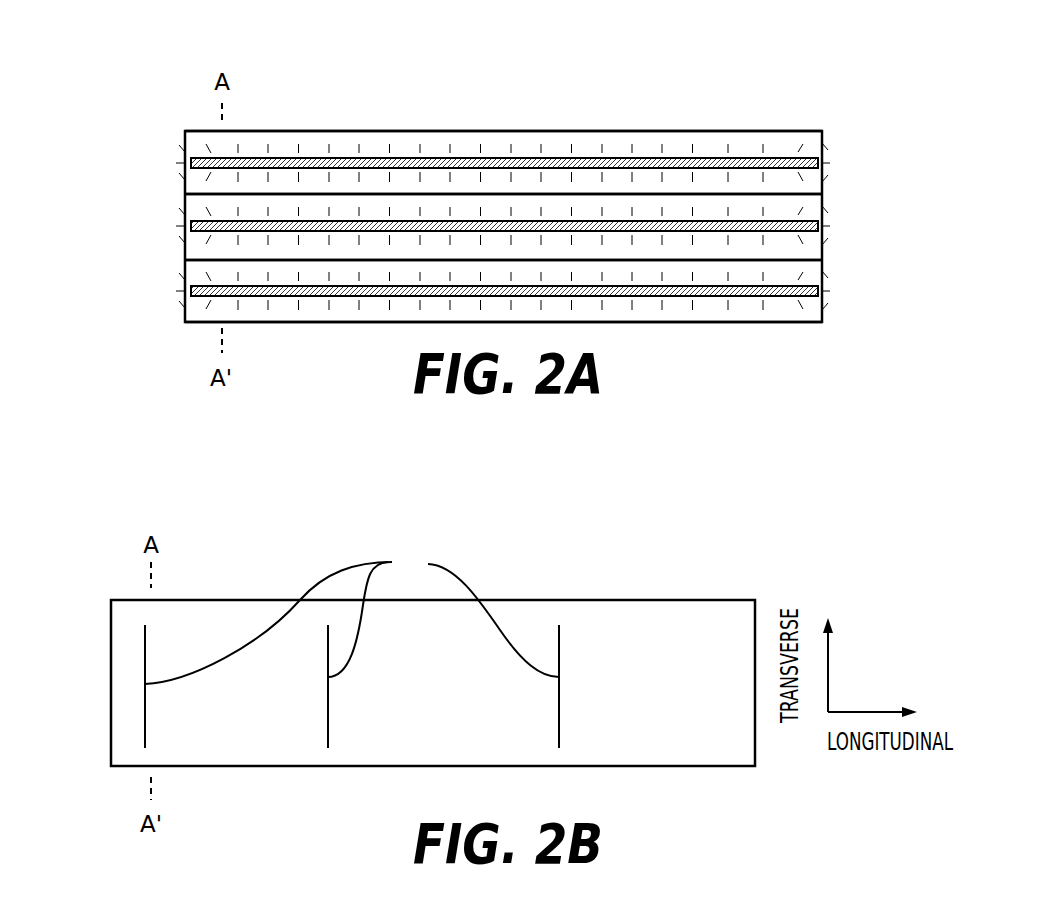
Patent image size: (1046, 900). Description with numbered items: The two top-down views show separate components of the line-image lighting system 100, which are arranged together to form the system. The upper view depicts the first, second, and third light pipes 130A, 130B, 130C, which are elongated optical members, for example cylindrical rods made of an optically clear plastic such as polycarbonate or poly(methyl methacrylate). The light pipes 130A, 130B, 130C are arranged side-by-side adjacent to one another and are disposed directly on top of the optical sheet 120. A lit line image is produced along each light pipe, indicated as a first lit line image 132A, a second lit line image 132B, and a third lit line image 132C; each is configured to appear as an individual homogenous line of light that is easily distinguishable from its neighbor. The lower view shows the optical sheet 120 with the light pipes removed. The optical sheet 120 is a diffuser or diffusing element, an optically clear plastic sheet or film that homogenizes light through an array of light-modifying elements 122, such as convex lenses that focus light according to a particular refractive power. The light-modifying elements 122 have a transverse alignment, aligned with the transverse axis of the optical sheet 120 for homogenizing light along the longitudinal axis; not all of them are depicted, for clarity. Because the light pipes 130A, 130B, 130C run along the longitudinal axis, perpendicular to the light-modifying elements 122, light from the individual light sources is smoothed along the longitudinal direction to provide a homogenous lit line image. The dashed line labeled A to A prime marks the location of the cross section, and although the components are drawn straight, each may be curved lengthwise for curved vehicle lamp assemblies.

In FIG. 2A, the line-image lighting system 100 is at (163, 83).
In FIG. 2B, the optical sheet 120 is at (130, 664).
In FIG. 2B, the light-modifying elements 122 is at (352, 649).
In FIG. 2A, the first light pipe 130A is at (788, 138).
In FIG. 2A, the second light pipe 130B is at (815, 247).
In FIG. 2A, the third light pipe 130C is at (793, 315).
In FIG. 2A, the first lit line image 132A is at (191, 163).
In FIG. 2A, the second lit line image 132B is at (191, 226).
In FIG. 2A, the third lit line image 132C is at (191, 291).